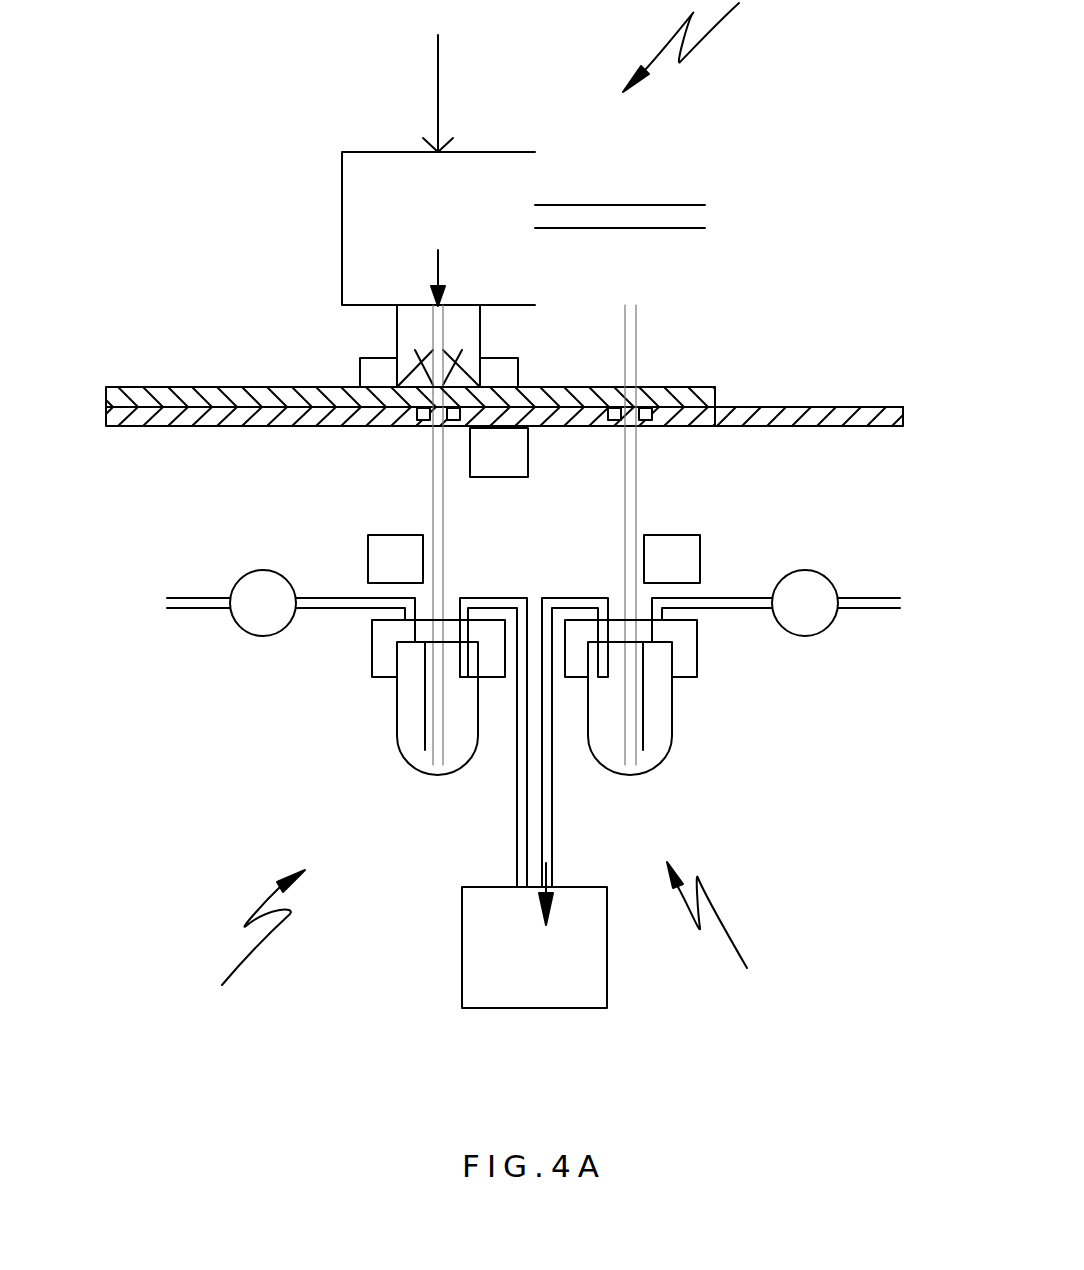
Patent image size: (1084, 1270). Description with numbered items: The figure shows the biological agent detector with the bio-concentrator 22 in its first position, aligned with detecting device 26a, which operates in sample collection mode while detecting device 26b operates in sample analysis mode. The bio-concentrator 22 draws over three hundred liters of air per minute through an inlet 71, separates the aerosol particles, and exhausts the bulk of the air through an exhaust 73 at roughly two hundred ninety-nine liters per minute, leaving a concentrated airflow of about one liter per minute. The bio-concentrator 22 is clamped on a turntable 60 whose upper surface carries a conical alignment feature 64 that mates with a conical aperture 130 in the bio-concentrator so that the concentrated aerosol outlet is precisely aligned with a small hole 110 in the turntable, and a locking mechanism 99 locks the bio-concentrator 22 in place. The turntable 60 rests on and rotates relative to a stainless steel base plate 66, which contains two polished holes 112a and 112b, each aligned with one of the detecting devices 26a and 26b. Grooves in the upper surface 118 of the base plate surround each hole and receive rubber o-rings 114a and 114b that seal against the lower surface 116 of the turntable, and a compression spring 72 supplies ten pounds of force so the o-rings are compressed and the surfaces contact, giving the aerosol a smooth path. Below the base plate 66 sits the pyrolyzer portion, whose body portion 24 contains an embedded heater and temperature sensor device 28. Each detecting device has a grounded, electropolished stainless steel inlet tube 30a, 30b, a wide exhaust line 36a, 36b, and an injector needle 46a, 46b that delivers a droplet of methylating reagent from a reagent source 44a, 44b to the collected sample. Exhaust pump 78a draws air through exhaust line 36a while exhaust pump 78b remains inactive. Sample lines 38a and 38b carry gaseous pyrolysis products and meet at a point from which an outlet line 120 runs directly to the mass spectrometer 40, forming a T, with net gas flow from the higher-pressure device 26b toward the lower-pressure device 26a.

The inlet 71 is at (438, 85).
The exhaust 73 is at (605, 205).
The bio-concentrator 22 is at (418, 228).
The turntable 60 is at (216, 388).
The conical alignment feature 64 is at (458, 375).
The locking mechanism 99 is at (507, 377).
The conical aperture 130 is at (417, 342).
The small hole 110 is at (442, 387).
The lower surface of the turntable 116 is at (669, 402).
The upper surface of the base plate 118 is at (793, 407).
The base plate 66 is at (877, 427).
The hole 112a is at (432, 424).
The hole 112b is at (647, 425).
The rubber o-ring 114a is at (455, 420).
The rubber o-ring 114b is at (618, 422).
The compression spring 72 is at (485, 463).
The aerosol outlet exhaust line 36a is at (200, 598).
The aerosol outlet exhaust line 36b is at (868, 598).
The exhaust pump 78a is at (267, 587).
The exhaust pump 78b is at (808, 587).
The reagent source 44a is at (368, 560).
The reagent source 44b is at (702, 542).
The inlet tube 30a is at (443, 545).
The inlet tube 30b is at (624, 545).
The sample line 38a is at (460, 598).
The sample line 38b is at (555, 598).
The body portion 24 is at (380, 652).
The heater and temperature sensor device 28 is at (415, 772).
The injector needle 46a is at (425, 717).
The injector needle 46b is at (645, 727).
The outlet line 120 is at (533, 813).
The mass spectrometer 40 is at (523, 972).
The detecting device 26a is at (236, 943).
The detecting device 26b is at (723, 934).